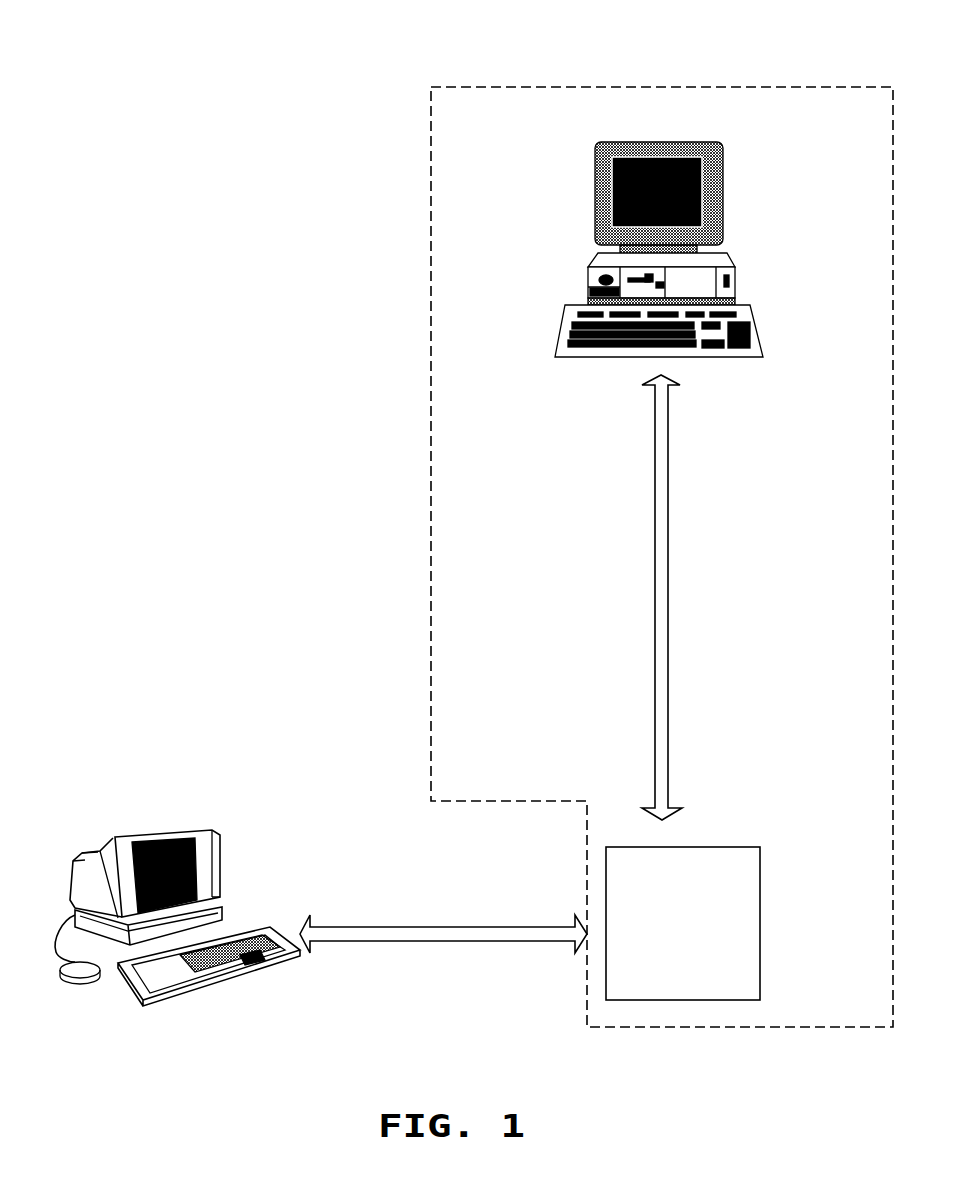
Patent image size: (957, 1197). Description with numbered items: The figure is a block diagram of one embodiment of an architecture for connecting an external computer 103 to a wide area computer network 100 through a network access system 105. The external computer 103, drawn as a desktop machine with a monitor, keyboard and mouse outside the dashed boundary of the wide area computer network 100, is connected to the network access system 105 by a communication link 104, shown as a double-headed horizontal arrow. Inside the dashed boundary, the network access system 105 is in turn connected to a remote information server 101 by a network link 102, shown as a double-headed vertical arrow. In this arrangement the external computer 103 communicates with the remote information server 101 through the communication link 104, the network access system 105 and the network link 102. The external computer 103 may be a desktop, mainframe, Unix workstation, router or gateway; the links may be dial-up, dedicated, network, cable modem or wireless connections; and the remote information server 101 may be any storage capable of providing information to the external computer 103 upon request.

The wide area computer network 100 is at (628, 85).
The remote information server 101 is at (583, 178).
The network link 102 is at (643, 536).
The external computer 103 is at (137, 830).
The communication link 104 is at (414, 925).
The network access system 105 is at (702, 847).